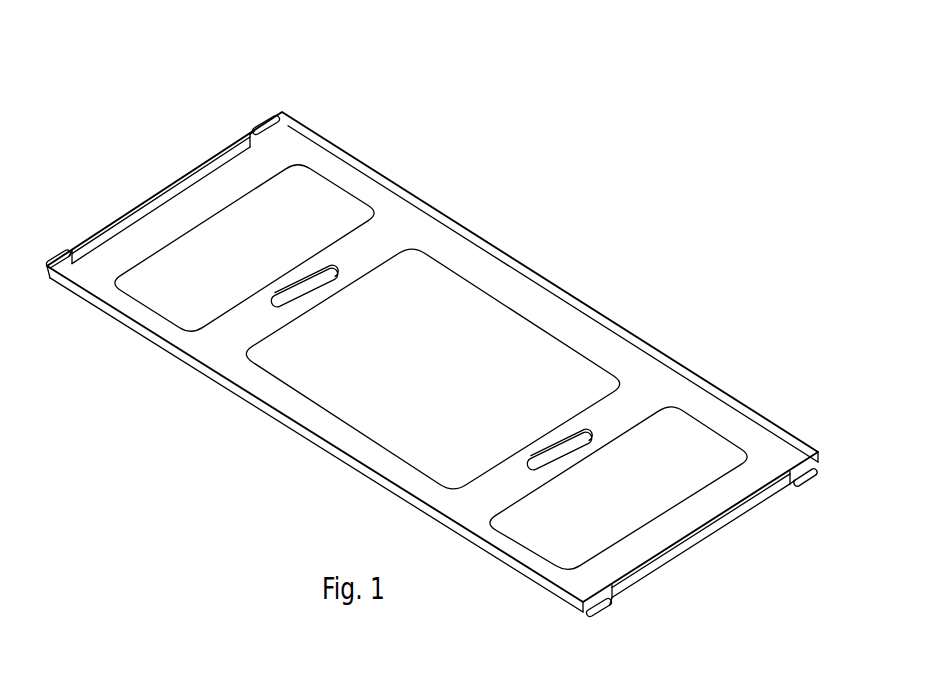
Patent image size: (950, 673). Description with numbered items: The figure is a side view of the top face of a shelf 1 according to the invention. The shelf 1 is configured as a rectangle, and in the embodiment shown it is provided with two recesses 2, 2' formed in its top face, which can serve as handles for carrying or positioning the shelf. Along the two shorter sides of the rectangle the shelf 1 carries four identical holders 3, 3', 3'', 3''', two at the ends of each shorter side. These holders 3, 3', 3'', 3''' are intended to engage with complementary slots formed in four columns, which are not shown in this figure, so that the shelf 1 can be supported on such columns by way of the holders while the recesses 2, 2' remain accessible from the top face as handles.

The shelf 1 is at (537, 258).
The recess 2 is at (364, 207).
The recess 2' is at (619, 370).
The holder 3 is at (854, 470).
The holder 3' is at (648, 601).
The holder 3'' is at (300, 82).
The holder 3''' is at (97, 206).